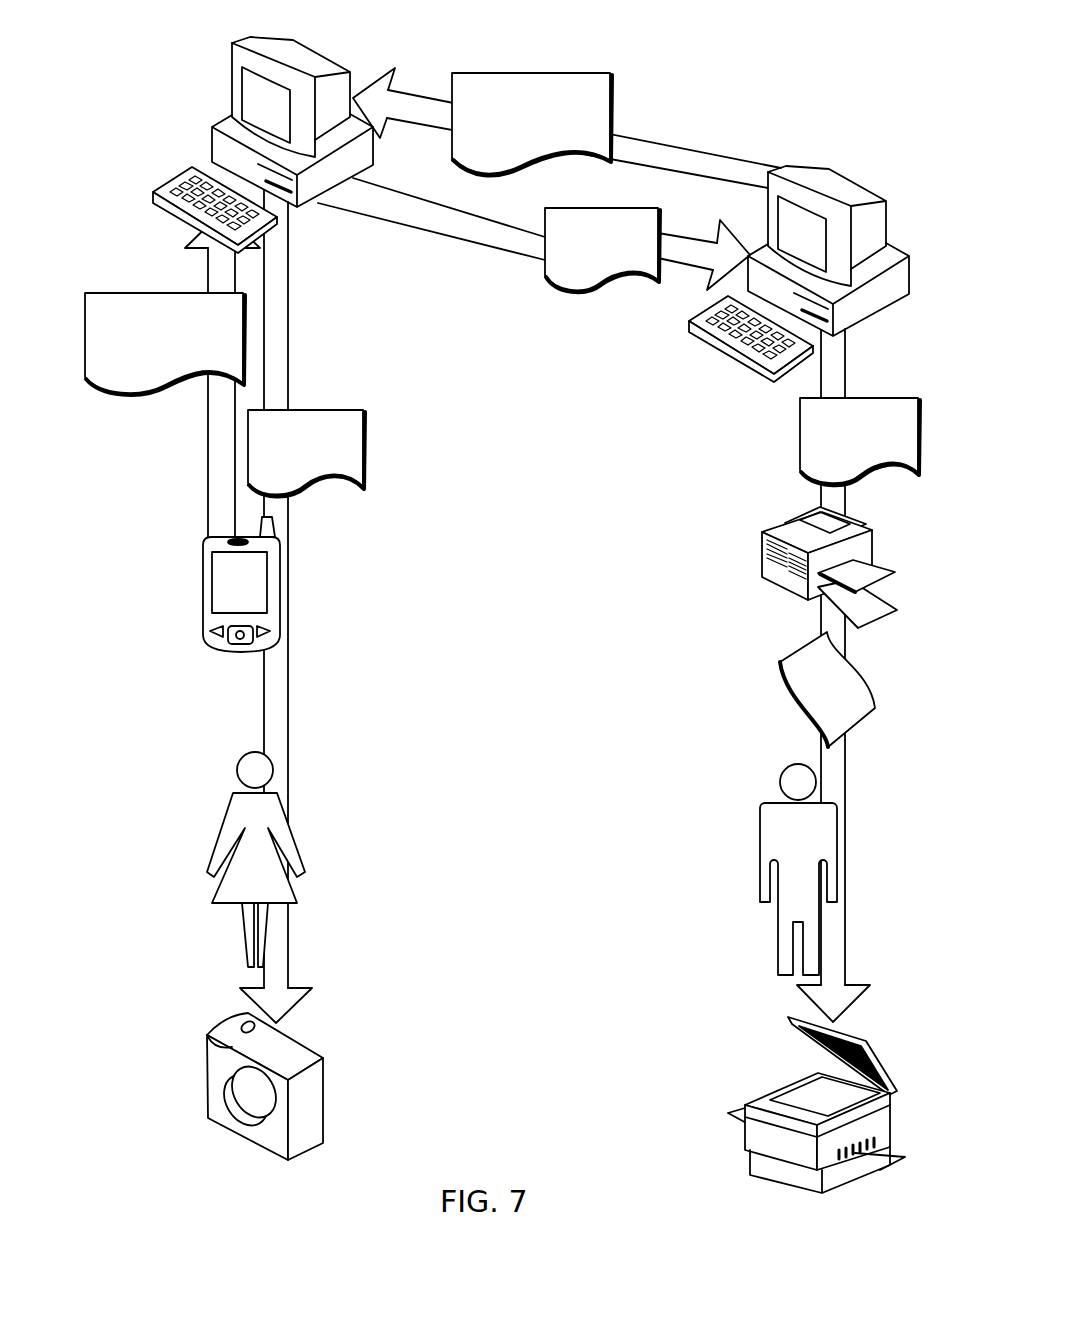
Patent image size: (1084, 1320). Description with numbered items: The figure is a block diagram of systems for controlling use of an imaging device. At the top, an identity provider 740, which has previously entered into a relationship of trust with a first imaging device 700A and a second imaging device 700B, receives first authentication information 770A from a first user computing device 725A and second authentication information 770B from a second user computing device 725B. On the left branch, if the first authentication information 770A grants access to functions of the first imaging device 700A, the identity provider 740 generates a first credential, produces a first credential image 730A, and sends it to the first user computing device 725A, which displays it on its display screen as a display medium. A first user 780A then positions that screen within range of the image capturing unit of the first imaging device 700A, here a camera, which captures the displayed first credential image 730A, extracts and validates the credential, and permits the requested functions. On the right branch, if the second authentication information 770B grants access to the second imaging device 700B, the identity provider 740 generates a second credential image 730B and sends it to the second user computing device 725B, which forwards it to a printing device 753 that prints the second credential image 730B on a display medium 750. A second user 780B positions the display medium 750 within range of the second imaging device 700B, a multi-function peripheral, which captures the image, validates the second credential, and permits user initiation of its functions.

The identity provider 740 is at (233, 48).
The second user computing device 725B is at (836, 170).
The second authentication information 770B is at (612, 74).
The first authentication information 770A is at (152, 293).
The first credential image 730A is at (363, 411).
The second credential image 730B is at (545, 278).
The first user computing device 725A is at (203, 570).
The first user 780A is at (227, 818).
The first imaging device 700A is at (208, 1037).
The printing device 753 is at (762, 555).
The display medium 750 is at (780, 677).
The second user 780B is at (760, 828).
The second imaging device 700B is at (752, 1100).